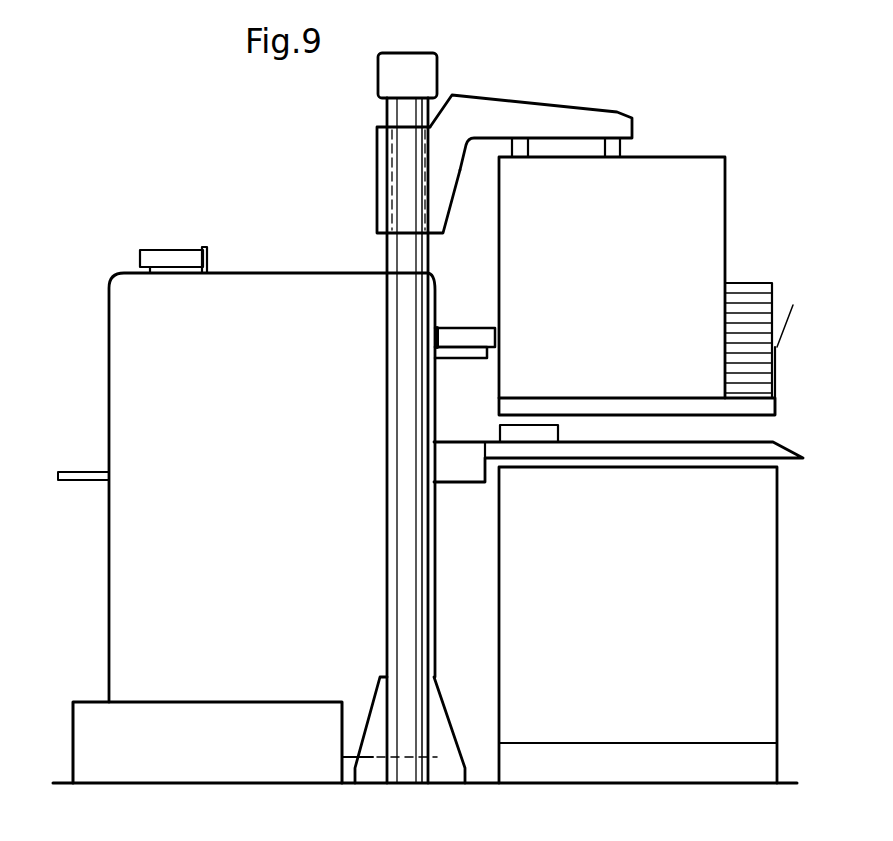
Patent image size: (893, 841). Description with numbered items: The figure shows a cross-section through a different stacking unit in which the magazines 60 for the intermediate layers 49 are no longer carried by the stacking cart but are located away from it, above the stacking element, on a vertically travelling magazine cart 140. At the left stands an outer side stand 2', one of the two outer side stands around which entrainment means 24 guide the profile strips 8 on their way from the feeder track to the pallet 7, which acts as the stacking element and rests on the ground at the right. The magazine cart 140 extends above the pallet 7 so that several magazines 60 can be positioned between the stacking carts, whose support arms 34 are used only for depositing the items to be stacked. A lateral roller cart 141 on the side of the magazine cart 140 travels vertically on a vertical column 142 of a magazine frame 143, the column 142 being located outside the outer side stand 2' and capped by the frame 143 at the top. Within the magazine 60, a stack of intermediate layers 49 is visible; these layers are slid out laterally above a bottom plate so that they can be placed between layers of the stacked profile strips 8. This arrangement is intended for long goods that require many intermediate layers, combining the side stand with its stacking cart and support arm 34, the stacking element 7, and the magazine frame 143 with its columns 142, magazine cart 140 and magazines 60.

The outer side stand 2' is at (247, 515).
The pallet 7 is at (644, 718).
The profile strips 8 is at (465, 335).
The entrainment means 24 is at (458, 353).
The support arm 34 is at (689, 448).
The intermediate layers 49 is at (757, 291).
The magazine 60 is at (675, 168).
The magazine cart 140 is at (532, 115).
The lateral roller cart 141 is at (383, 187).
The vertical columns 142 is at (397, 255).
The magazine frame 143 is at (376, 103).